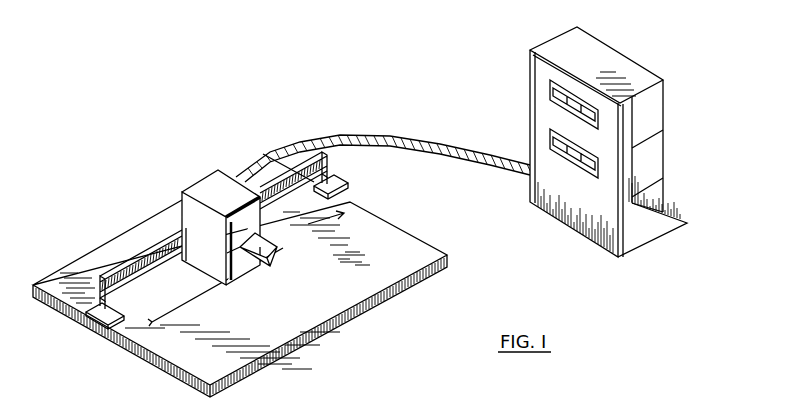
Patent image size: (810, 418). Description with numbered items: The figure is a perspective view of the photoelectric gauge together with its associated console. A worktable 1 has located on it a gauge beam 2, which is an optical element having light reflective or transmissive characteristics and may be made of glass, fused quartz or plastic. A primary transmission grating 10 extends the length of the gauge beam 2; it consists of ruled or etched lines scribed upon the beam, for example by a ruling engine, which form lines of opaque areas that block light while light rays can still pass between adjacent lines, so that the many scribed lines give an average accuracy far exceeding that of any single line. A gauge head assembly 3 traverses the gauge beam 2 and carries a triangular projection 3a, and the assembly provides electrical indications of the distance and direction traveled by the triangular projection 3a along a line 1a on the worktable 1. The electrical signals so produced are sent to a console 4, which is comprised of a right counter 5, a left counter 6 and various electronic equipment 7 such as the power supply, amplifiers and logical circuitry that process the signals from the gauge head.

The base plate 1 is at (290, 299).
The guide line on base plate 1a is at (286, 249).
The rail 2 is at (155, 244).
The rail base / scale 10 is at (150, 269).
The carriage unit 3 is at (208, 186).
The sensor head 3a is at (262, 246).
The control unit 4 is at (553, 29).
The upper panel 5 is at (653, 128).
The middle panel 6 is at (652, 171).
The lower panel 7 is at (660, 208).